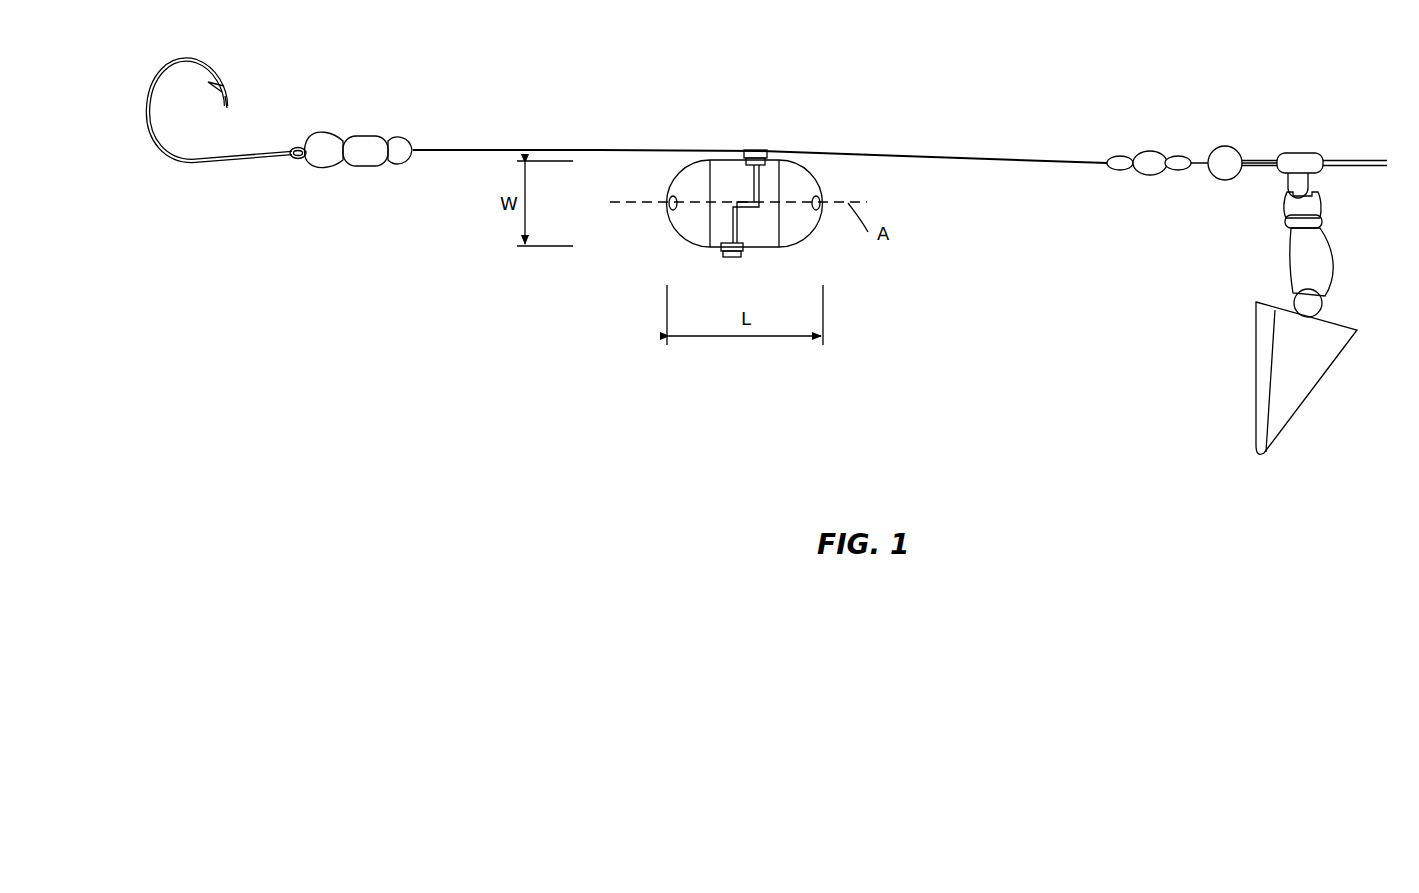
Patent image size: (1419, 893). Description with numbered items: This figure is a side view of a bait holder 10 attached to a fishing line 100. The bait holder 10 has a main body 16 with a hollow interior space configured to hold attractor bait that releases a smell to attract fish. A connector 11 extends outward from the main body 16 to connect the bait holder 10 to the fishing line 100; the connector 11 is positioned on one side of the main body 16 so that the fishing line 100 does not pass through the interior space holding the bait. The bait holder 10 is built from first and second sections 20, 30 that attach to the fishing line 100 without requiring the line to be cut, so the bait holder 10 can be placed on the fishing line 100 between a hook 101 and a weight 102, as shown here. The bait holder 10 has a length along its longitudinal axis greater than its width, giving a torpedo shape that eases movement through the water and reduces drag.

The bait holder 10 is at (663, 247).
The connector 11 is at (750, 150).
The main body 16 is at (752, 235).
The first section 20 is at (672, 220).
The second section 30 is at (817, 192).
The fishing line 100 is at (940, 156).
The hook 101 is at (230, 158).
The weight 102 is at (1285, 390).